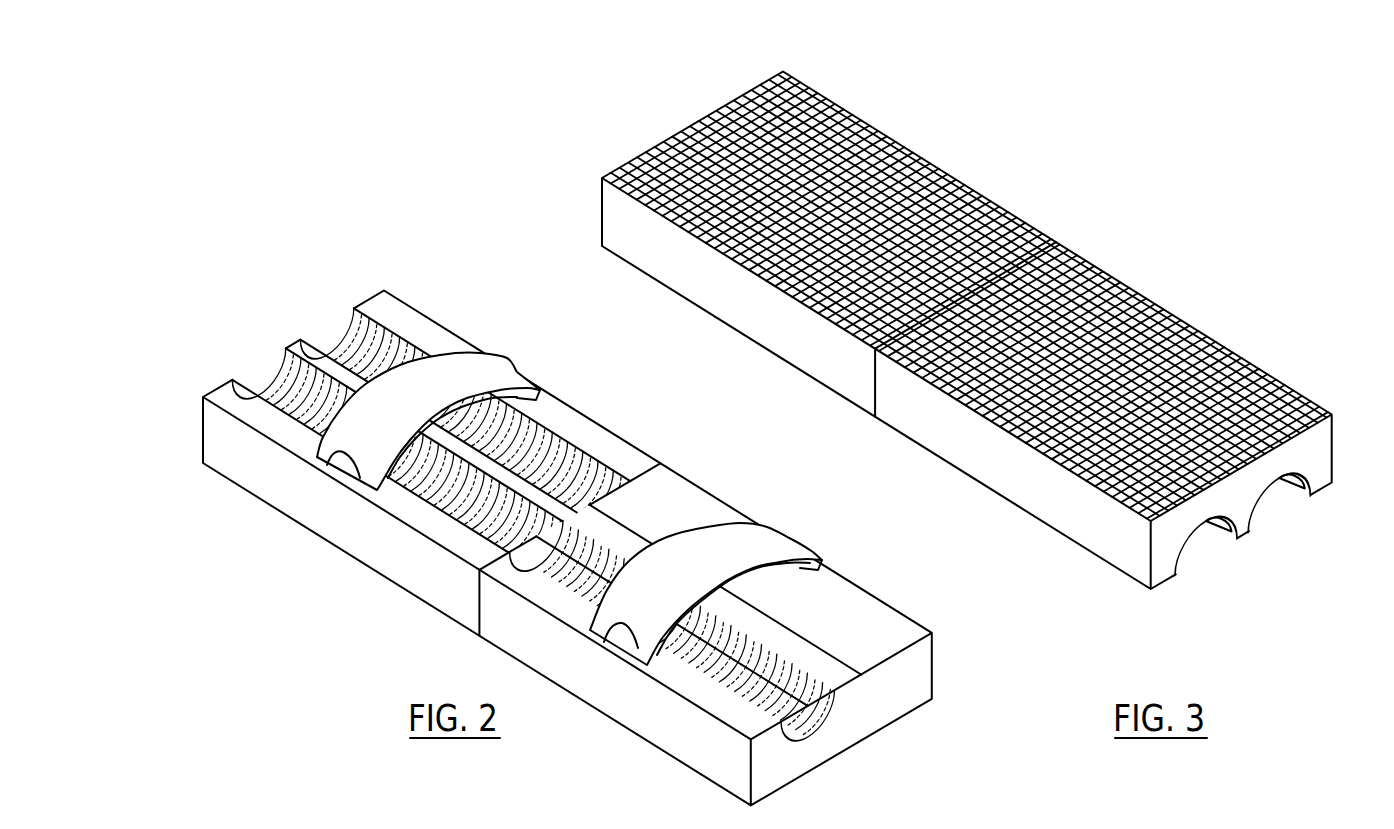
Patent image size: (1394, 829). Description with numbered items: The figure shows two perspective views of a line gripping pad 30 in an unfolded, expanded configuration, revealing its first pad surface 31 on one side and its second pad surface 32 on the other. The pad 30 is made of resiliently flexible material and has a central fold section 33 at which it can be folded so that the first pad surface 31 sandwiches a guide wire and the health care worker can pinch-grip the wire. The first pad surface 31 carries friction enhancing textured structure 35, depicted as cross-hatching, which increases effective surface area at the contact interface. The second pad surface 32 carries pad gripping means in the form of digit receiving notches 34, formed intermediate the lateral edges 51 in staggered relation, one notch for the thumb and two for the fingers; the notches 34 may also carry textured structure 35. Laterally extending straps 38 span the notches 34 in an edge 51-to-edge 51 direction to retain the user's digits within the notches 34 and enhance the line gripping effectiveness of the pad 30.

In FIG. 2, the line gripping pad 30 is at (577, 488).
In FIG. 3, the line gripping pad 30 is at (991, 350).
In FIG. 3, the first pad surface 31 is at (916, 188).
In FIG. 2, the second pad surface 32 is at (675, 477).
In FIG. 2, the central fold section 33 is at (800, 437).
In FIG. 2, the digit receiving notch 34 is at (251, 360).
In FIG. 3, the digit receiving notch 34 is at (1284, 519).
In FIG. 2, the textured structure 35 is at (518, 439).
In FIG. 3, the textured structure 35 is at (1193, 365).
In FIG. 2, the laterally extending strap 38 is at (327, 465).
In FIG. 2, the lateral edge 51 is at (240, 470).
In FIG. 3, the lateral edge 51 is at (1330, 447).